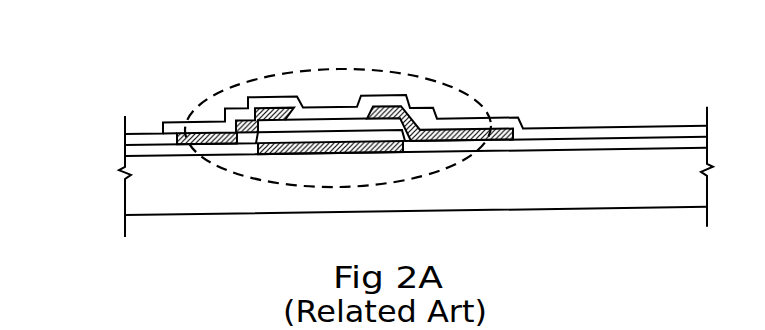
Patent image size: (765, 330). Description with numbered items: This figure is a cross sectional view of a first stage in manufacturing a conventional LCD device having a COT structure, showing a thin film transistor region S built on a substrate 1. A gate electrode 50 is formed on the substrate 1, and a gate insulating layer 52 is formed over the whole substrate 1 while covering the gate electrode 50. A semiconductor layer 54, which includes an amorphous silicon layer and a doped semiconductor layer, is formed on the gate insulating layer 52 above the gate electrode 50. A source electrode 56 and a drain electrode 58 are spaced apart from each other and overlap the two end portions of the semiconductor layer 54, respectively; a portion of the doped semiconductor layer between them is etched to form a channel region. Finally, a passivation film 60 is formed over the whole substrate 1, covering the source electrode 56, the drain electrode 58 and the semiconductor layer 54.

The substrate 1 is at (416, 172).
The gate electrode 50 is at (372, 143).
The gate insulating layer 52 is at (627, 140).
The semiconductor layer 54 is at (343, 123).
The source electrode 56 is at (290, 110).
The drain electrode 58 is at (428, 120).
The passivation film 60 is at (568, 132).
The thin film transistor region S is at (223, 88).